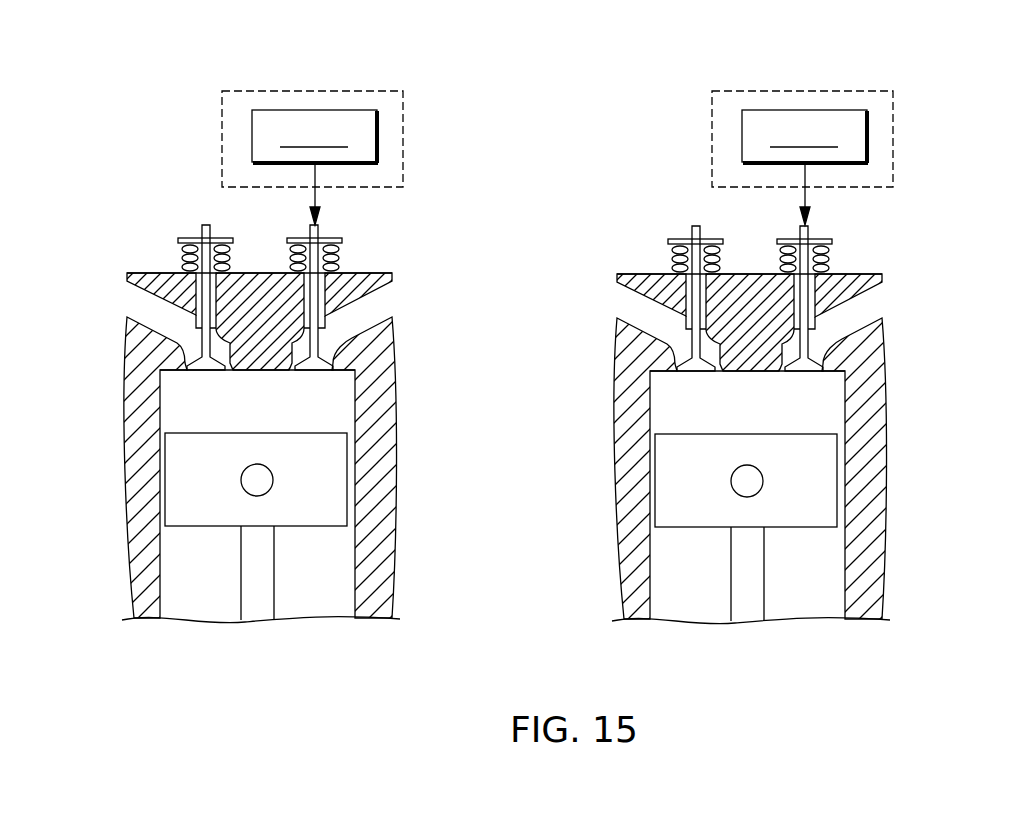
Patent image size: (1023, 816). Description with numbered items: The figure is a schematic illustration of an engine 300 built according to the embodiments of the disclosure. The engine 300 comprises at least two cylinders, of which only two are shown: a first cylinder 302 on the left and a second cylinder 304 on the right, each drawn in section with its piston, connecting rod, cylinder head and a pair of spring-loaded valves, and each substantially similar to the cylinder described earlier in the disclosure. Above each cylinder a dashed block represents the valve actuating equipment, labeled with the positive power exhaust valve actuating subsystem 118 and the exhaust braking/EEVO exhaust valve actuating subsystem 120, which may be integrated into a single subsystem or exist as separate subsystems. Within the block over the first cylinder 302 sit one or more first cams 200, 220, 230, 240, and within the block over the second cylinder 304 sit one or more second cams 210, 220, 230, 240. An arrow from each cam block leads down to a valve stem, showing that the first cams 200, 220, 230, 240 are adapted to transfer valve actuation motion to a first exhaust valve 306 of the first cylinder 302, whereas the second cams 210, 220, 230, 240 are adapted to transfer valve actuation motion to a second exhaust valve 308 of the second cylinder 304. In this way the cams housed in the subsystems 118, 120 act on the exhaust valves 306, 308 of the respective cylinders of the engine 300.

The positive power exhaust valve actuating subsystem 118 is at (403, 138).
The exhaust braking/EEVO exhaust valve actuating subsystem 120 is at (851, 134).
The first cam 200 is at (314, 110).
The second cam 210 is at (797, 134).
The cam 220 is at (315, 167).
The cam 230 is at (805, 167).
The cam 240 is at (315, 167).
The engine 300 is at (528, 515).
The first cylinder 302 is at (193, 600).
The second cylinder 304 is at (751, 442).
The first exhaust valve 306 is at (300, 377).
The second exhaust valve 308 is at (804, 326).